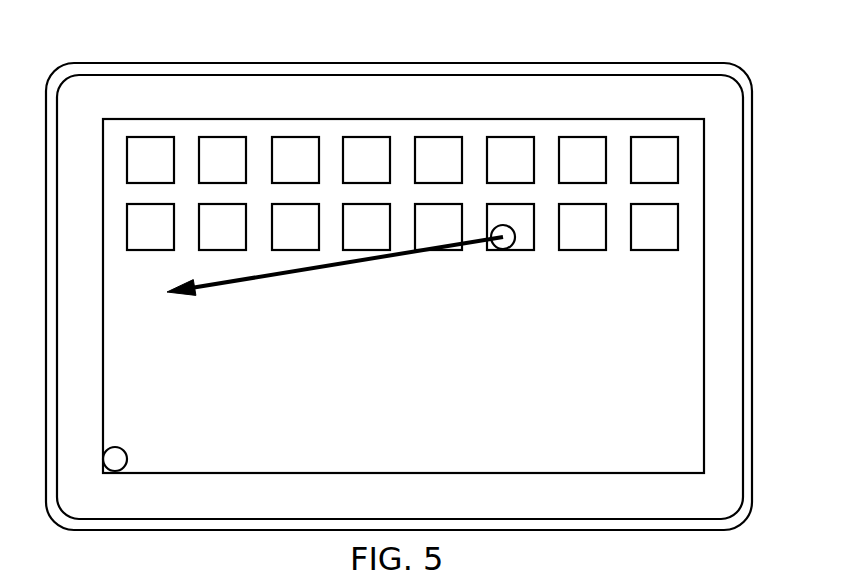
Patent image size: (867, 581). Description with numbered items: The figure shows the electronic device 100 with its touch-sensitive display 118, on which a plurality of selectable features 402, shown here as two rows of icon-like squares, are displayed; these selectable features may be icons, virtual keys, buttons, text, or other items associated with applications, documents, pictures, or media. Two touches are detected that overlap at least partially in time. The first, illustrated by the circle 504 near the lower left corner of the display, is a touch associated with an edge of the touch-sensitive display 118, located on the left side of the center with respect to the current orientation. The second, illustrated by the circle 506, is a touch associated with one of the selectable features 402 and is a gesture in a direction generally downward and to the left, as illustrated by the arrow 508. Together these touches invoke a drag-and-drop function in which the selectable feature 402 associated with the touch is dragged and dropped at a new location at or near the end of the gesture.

The electronic device 100 is at (711, 565).
The touch-sensitive display 118 is at (743, 183).
The selectable features 402 is at (582, 138).
The circle 504 is at (125, 468).
The circle 506 is at (499, 226).
The arrow 508 is at (270, 272).